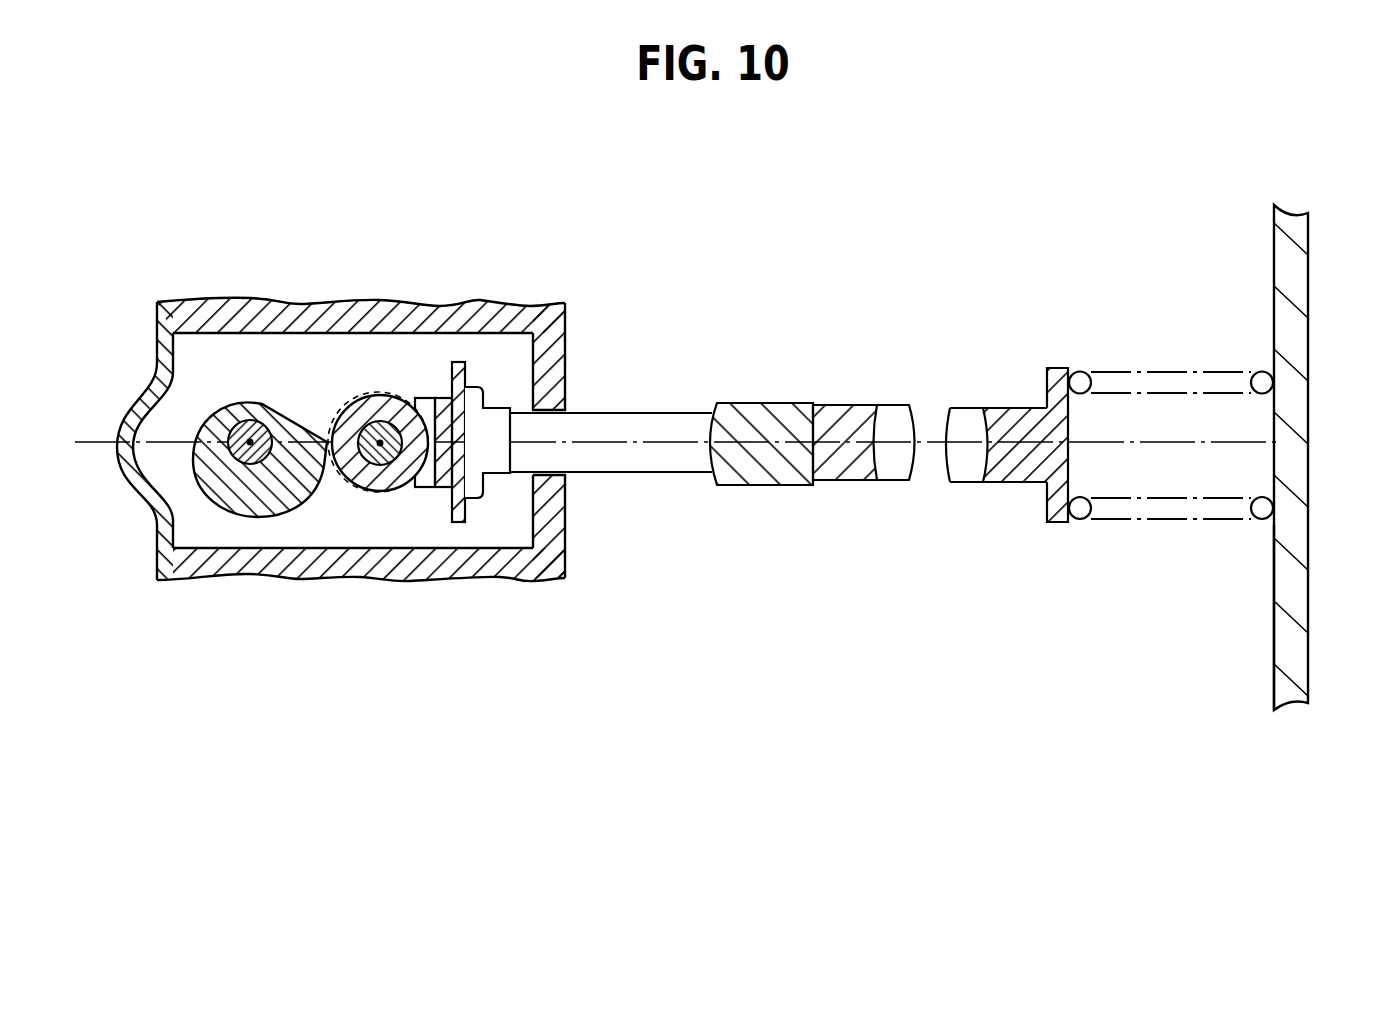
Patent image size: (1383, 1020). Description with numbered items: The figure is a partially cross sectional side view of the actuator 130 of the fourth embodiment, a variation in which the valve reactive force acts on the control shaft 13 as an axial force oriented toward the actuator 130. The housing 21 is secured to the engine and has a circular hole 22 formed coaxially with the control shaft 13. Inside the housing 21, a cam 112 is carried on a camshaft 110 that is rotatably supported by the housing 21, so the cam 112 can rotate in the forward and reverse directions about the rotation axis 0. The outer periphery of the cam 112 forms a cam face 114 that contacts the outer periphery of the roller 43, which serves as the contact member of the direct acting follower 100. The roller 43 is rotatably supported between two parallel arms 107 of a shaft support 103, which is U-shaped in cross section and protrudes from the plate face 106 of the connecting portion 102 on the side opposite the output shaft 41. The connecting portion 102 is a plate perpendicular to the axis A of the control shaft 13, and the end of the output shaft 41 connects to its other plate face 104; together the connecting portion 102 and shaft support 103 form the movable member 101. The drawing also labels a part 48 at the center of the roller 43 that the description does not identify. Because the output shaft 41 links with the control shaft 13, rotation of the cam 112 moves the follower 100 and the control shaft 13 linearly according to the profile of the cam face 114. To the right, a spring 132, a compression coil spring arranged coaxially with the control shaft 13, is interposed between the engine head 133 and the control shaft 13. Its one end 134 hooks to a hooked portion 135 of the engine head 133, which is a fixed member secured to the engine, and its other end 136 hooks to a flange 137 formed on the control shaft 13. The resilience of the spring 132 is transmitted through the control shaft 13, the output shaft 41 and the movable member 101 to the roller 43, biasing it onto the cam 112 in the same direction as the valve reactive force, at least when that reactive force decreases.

The actuator 130 is at (324, 436).
The camshaft 110 is at (162, 522).
The housing 21 is at (215, 572).
The circular hole 22 is at (555, 463).
The cam 112 is at (247, 410).
The cam face 114 is at (298, 514).
The rotation axis 0 is at (262, 452).
The arms 107 is at (352, 390).
The direct acting follower 100 is at (342, 496).
The roller pin 48 is at (380, 463).
The roller 43 is at (415, 417).
The shaft support 103 is at (415, 500).
The connecting portion 102 is at (458, 524).
The movable member 101 is at (429, 478).
The plate face 106 is at (429, 458).
The plate face 104 is at (483, 468).
The output shaft 41 is at (610, 418).
The axis A is at (929, 440).
The control shaft 13 is at (963, 416).
The flange 137 is at (1052, 375).
The other end 136 is at (1171, 474).
The spring 132 is at (1193, 522).
The one end 134 is at (1262, 517).
The engine head 133 is at (1320, 451).
The hooked portion 135 is at (1268, 525).